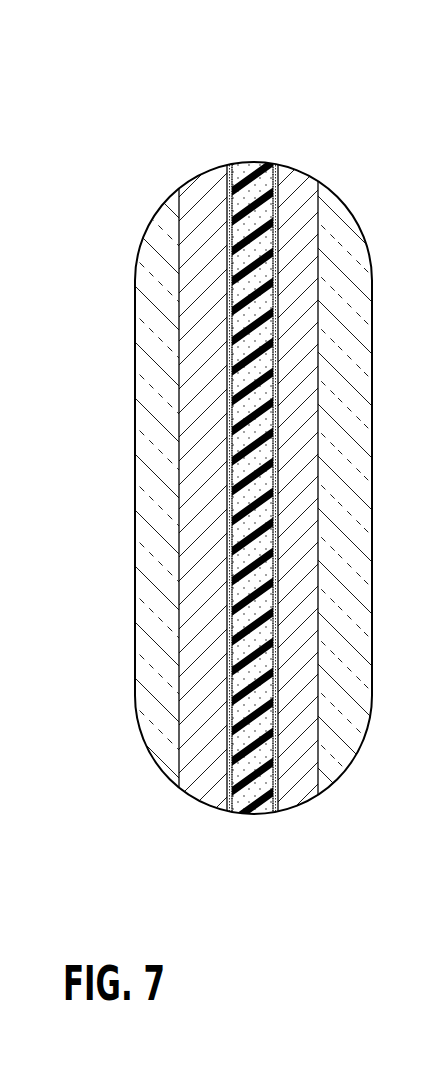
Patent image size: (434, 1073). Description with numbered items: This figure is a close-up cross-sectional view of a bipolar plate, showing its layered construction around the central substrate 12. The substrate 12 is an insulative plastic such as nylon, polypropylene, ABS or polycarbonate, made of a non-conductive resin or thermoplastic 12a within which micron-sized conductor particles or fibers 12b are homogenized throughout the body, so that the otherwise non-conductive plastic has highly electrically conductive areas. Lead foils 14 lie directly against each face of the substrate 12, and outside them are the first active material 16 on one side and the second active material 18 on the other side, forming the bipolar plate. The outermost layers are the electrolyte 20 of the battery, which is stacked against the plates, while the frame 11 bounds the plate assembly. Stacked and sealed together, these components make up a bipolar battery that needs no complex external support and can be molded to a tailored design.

The frame 11 is at (284, 488).
The substrate 12 is at (250, 162).
The resin or thermoplastic 12a is at (238, 731).
The conductor particles or fibers 12b is at (247, 815).
The lead foils 14 is at (232, 163).
The first active material 16 is at (202, 793).
The second active material 18 is at (297, 190).
The electrolyte 20 is at (148, 252).